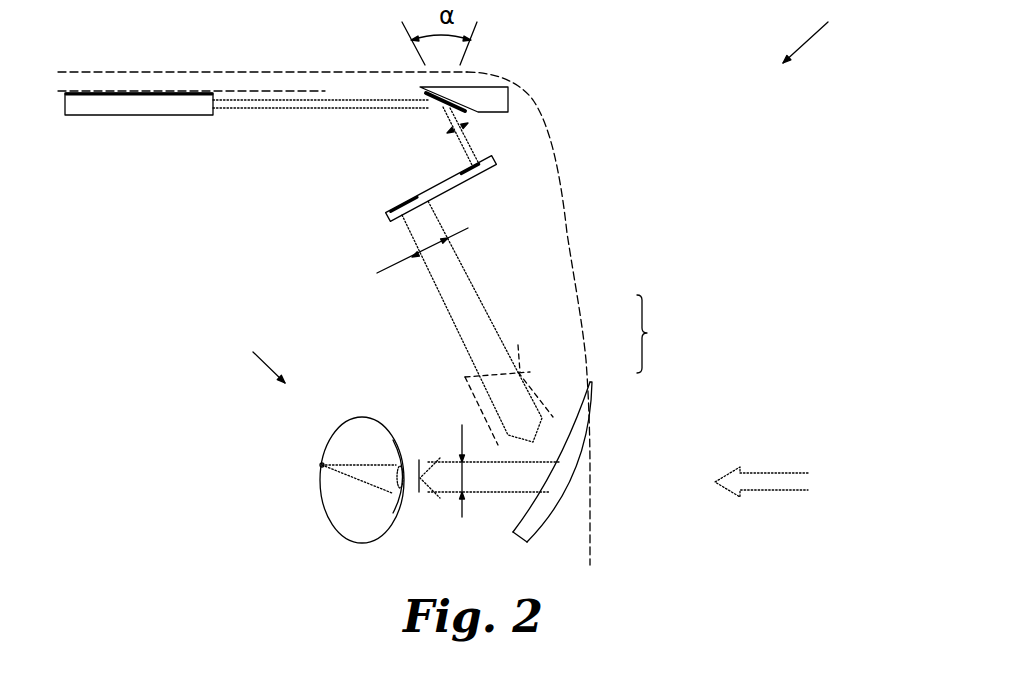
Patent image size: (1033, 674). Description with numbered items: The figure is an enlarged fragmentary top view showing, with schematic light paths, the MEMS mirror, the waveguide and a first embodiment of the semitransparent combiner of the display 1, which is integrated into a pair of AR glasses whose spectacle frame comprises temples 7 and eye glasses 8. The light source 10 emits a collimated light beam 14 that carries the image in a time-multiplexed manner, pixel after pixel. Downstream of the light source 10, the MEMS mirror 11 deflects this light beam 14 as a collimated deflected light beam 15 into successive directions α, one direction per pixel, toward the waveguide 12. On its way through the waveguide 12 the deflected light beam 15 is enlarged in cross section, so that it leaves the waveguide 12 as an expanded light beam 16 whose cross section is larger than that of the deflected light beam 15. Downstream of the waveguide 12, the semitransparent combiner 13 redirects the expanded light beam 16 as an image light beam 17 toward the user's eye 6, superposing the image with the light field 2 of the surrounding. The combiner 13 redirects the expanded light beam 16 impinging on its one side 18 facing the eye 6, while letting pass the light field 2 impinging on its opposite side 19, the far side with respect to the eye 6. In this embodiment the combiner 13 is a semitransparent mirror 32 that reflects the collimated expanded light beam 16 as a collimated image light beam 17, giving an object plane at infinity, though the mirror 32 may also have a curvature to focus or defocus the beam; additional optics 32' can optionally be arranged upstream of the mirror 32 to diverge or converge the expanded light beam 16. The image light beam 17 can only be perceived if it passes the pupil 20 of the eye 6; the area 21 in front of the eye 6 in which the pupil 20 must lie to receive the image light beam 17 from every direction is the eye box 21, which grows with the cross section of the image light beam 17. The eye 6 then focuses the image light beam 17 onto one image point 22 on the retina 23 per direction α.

The display 1 is at (818, 31).
The light field 2 is at (770, 477).
The user's eye 6 is at (260, 356).
The temples 7 is at (140, 82).
The eye glasses 8 is at (573, 255).
The light source 10 is at (127, 108).
The MEMS mirror 11 is at (412, 152).
The waveguide 12 is at (432, 190).
The semitransparent combiner 13 is at (657, 334).
The light beam 14 is at (290, 103).
The deflected light beam 15 is at (463, 137).
The expanded light beam 16 is at (435, 292).
The image light beam 17 is at (470, 480).
The one side 18 is at (525, 517).
The opposite side 19 is at (548, 518).
The pupil 20 is at (403, 467).
The eye box 21 is at (422, 492).
The image point 22 is at (322, 465).
The retina 23 is at (320, 500).
The semitransparent mirror 32 is at (557, 462).
The additional optics 32' is at (548, 372).